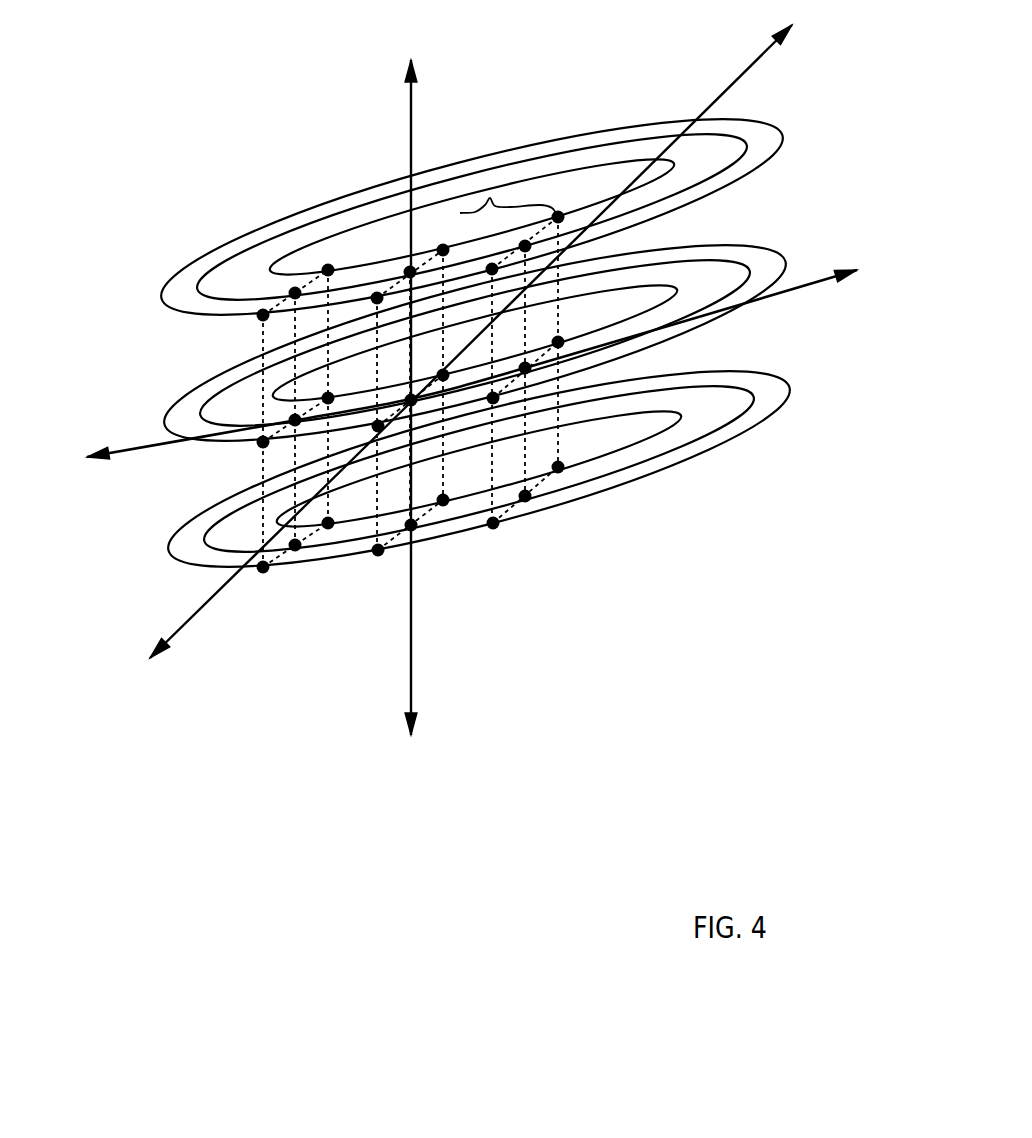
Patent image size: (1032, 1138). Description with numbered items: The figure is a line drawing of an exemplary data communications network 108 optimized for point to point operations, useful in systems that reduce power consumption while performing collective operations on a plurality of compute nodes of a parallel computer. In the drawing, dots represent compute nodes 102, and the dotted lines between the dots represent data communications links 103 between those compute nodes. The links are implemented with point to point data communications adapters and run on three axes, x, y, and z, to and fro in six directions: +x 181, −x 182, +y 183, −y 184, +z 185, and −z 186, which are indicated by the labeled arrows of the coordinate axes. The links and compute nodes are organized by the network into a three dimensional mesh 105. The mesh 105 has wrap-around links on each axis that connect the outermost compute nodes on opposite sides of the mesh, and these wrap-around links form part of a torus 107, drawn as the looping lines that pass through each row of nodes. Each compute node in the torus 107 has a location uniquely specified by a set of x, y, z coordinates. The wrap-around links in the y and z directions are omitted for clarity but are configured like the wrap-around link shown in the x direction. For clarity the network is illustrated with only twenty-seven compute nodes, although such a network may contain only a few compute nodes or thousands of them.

The compute nodes 102 is at (558, 467).
The data communications links 103 is at (263, 470).
The three dimensional mesh 105 is at (502, 196).
The torus 107 is at (240, 227).
The data communications network 108 is at (474, 489).
The +x direction 181 is at (862, 302).
The −x direction 182 is at (55, 497).
The +y direction 183 is at (803, 52).
The −y direction 184 is at (115, 707).
The +z direction 185 is at (397, 52).
The −z direction 186 is at (430, 798).